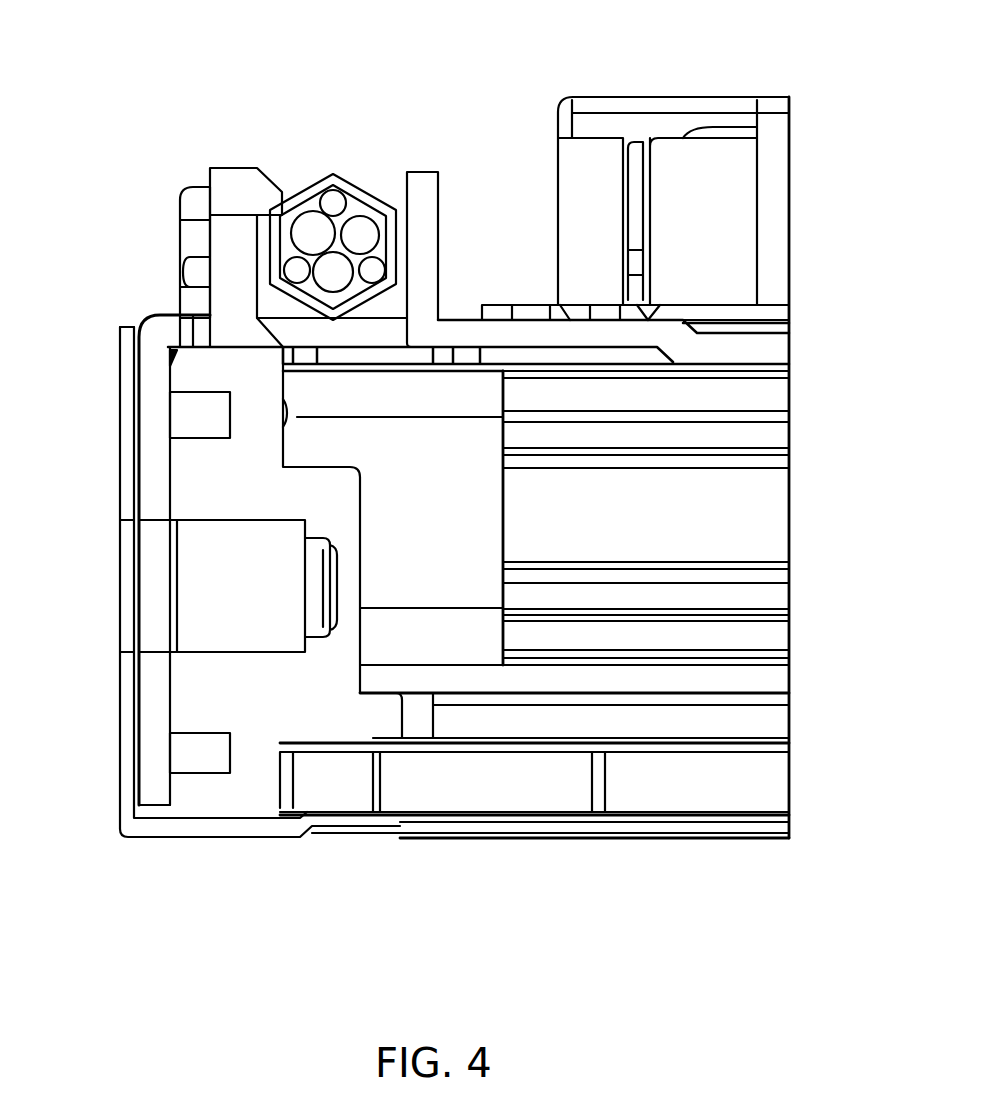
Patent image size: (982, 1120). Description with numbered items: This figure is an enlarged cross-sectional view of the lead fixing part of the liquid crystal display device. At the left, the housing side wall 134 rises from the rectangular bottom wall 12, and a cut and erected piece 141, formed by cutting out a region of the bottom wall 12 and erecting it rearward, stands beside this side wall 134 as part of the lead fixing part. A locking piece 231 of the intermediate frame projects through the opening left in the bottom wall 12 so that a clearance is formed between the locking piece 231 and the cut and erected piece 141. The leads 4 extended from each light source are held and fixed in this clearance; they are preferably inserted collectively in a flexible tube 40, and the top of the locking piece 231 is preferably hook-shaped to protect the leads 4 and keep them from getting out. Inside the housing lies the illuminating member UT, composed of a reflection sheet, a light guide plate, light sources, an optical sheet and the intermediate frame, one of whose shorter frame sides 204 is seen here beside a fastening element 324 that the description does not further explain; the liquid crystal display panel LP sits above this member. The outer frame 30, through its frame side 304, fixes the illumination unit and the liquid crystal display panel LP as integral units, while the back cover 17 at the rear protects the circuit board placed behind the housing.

The side wall 134 is at (158, 335).
The outer frame 30 is at (190, 838).
The frame side 304 is at (128, 465).
The frame side 204 is at (200, 488).
The fixing bolt 324 is at (125, 606).
The locking piece 231 is at (232, 188).
The tube 40 is at (348, 178).
The lead 4 is at (333, 200).
The cut and erected piece 141 is at (425, 172).
The bottom wall 12 is at (550, 332).
The back cover 17 is at (708, 97).
The illuminating member UT is at (797, 365).
The liquid crystal display panel LP is at (789, 780).